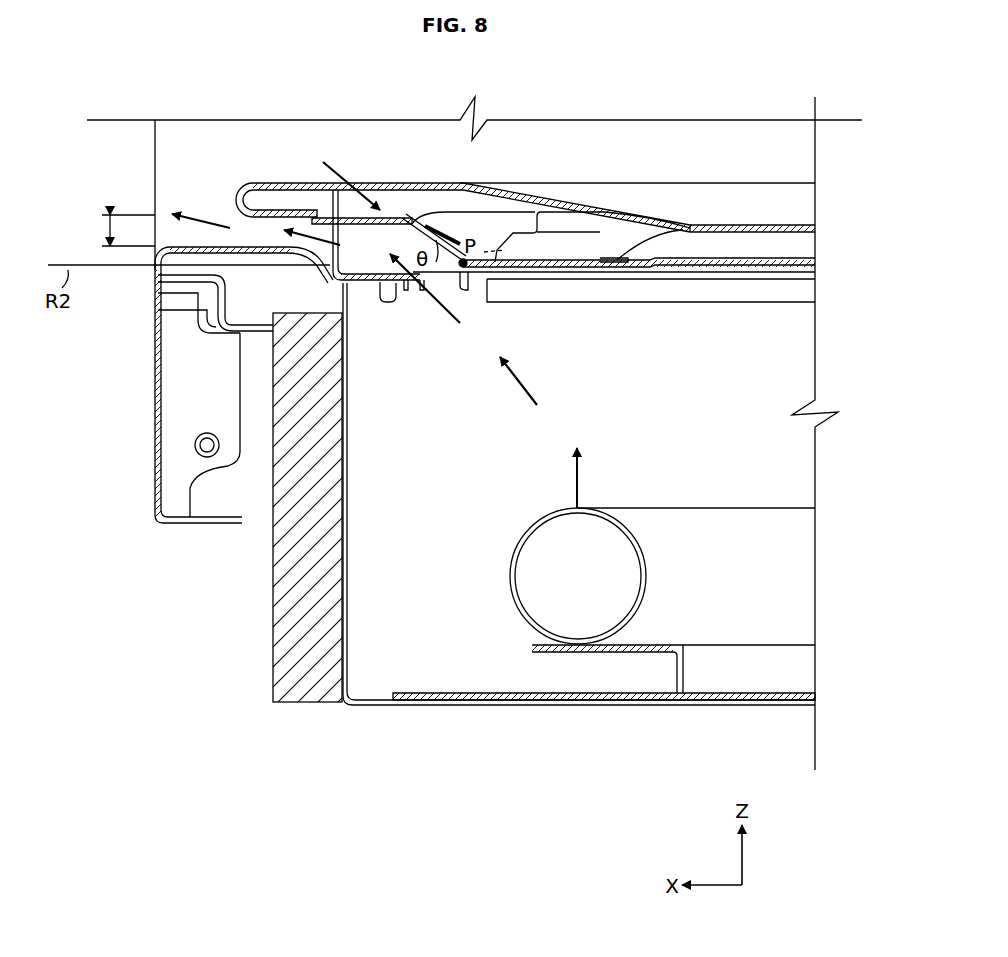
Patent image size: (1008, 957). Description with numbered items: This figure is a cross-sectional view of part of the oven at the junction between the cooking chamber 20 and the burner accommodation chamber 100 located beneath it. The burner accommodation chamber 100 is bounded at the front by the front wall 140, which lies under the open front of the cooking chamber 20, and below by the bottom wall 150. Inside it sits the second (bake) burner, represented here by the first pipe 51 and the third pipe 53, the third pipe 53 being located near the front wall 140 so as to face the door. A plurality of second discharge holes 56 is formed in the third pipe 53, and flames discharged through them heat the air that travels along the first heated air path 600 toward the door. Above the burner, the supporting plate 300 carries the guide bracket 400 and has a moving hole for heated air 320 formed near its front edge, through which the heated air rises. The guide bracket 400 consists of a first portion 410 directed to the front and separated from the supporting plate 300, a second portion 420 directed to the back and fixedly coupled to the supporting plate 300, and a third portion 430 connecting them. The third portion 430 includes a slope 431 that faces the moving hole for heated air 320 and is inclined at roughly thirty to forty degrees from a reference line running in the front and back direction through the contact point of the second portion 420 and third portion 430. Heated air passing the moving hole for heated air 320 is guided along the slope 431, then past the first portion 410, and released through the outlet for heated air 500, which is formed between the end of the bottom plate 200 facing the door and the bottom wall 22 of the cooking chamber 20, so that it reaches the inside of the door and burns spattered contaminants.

The cooking chamber 20 is at (710, 160).
The bottom wall 22 is at (210, 296).
The first pipe 51 is at (758, 522).
The third pipe 53 is at (510, 601).
The second discharge holes 56 is at (578, 510).
The burner accommodation chamber 100 is at (708, 360).
The front wall 140 is at (346, 550).
The bottom wall 150 is at (443, 706).
The bottom plate 200 is at (290, 183).
The supporting plate 300 is at (392, 302).
The moving hole for heated air 320 is at (421, 292).
The guide bracket 400 is at (398, 212).
The first portion 410 is at (357, 213).
The second portion 420 is at (592, 245).
The third portion 430 is at (450, 225).
The slope 431 is at (412, 228).
The outlet for heated air 500 is at (272, 236).
The first heated air path 600 is at (578, 485).